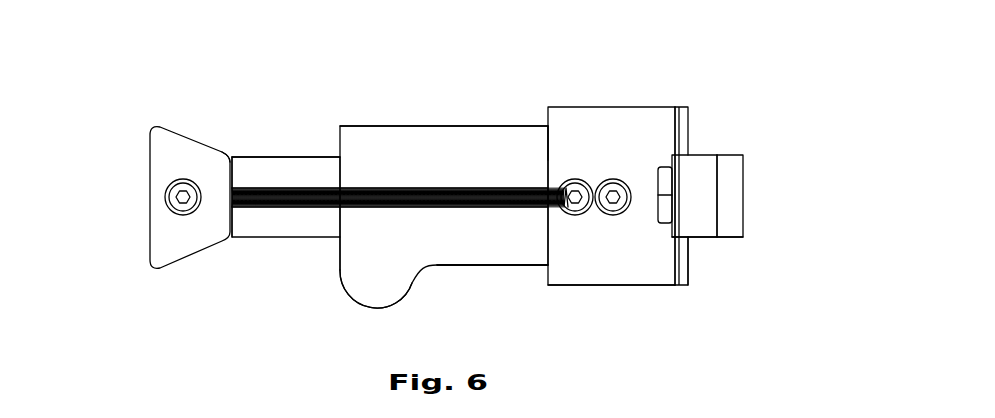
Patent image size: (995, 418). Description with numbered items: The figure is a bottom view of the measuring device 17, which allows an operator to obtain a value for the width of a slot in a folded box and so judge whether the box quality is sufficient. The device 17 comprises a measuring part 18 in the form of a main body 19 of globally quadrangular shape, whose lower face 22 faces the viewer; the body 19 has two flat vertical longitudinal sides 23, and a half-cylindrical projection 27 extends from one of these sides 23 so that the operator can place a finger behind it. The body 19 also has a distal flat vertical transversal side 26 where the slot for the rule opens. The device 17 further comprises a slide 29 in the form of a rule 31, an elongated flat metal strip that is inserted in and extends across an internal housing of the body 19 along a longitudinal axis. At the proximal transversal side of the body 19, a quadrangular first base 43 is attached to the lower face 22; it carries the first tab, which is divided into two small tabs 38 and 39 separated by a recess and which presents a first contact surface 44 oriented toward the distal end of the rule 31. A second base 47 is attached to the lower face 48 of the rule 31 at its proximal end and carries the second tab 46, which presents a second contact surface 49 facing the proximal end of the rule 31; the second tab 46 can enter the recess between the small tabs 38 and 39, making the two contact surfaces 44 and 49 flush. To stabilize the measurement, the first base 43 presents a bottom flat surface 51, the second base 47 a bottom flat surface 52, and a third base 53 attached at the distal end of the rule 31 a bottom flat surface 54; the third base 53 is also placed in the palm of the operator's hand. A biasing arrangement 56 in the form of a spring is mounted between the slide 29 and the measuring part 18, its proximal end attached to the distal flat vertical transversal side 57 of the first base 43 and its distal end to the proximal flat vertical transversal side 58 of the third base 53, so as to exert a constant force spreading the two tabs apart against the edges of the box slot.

The measuring device 17 is at (304, 66).
The measuring part 18 is at (410, 118).
The main body 19 is at (497, 266).
The lower face 22 is at (473, 137).
The flat vertical longitudinal sides 23 is at (365, 126).
The distal flat vertical transversal side 26 is at (338, 258).
The projection 27 is at (372, 306).
The slide 29 is at (268, 157).
The rule 31 is at (285, 238).
The small tab 38 is at (690, 277).
The small tab 39 is at (688, 117).
The first base 43 is at (600, 110).
The first contact surface 44 is at (675, 125).
The second tab 46 is at (680, 228).
The second base 47 is at (744, 155).
The lower face 48 is at (310, 168).
The second contact surface 49 is at (683, 209).
The bottom flat surface 51 is at (570, 270).
The bottom flat surface 52 is at (703, 183).
The third base 53 is at (152, 267).
The bottom flat surface 54 is at (165, 152).
The biasing arrangement 56 is at (252, 207).
The distal flat vertical transversal side 57 is at (548, 142).
The proximal flat vertical transversal side 58 is at (233, 160).